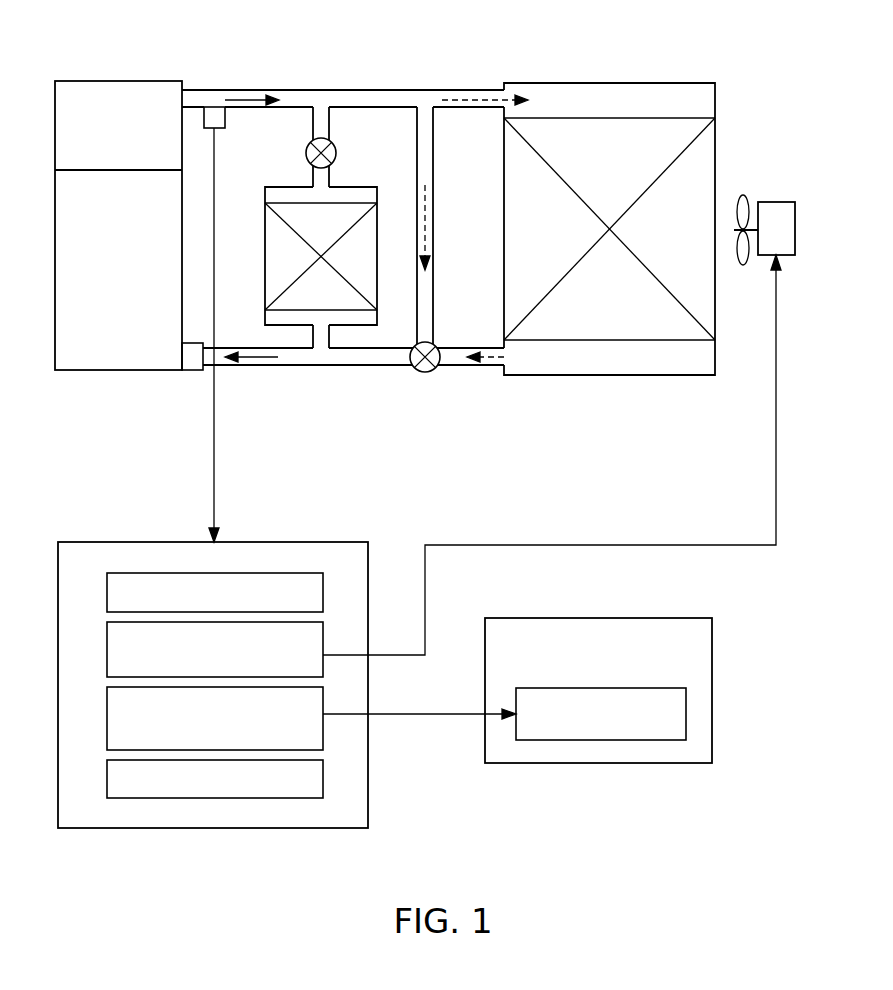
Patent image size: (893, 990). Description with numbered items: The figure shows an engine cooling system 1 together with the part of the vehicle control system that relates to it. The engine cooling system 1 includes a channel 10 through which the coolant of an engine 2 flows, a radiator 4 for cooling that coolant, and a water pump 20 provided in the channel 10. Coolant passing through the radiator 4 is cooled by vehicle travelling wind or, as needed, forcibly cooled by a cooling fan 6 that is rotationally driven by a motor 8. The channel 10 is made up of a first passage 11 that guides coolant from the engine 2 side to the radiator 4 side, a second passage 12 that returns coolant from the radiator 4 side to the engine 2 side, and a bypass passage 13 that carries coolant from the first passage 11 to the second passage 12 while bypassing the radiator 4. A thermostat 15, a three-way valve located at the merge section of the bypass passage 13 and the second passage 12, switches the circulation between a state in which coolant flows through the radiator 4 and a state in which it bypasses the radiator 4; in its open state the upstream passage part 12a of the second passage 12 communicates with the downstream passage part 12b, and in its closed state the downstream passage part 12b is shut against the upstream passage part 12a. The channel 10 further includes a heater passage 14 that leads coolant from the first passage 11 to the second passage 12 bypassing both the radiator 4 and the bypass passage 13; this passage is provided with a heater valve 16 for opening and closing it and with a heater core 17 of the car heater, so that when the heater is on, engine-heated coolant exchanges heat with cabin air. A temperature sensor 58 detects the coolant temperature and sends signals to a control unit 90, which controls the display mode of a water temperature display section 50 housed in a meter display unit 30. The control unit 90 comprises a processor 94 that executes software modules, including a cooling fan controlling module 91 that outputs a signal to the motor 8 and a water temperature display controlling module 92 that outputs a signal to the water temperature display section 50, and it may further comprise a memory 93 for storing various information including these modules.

The engine cooling system 1 is at (616, 62).
The engine 2 is at (114, 81).
The radiator 4 is at (669, 83).
The cooling fan 6 is at (742, 195).
The motor 8 is at (775, 202).
The channel 10 is at (473, 86).
The first passage 11 is at (345, 90).
The second passage 12 is at (373, 408).
The upstream passage part 12a is at (458, 370).
The downstream passage part 12b is at (391, 370).
The bypass passage 13 is at (433, 150).
The heater passage 14 is at (330, 124).
The thermostat 15 is at (437, 345).
The heater valve 16 is at (337, 150).
The heater core 17 is at (265, 232).
The water pump 20 is at (193, 372).
The meter display unit 30 is at (625, 690).
The water temperature display section 50 is at (686, 710).
The temperature sensor 58 is at (225, 119).
The control unit 90 is at (226, 671).
The cooling fan controlling module 91 is at (323, 645).
The water temperature display controlling module 92 is at (323, 708).
The memory 93 is at (323, 768).
The processor 94 is at (323, 582).